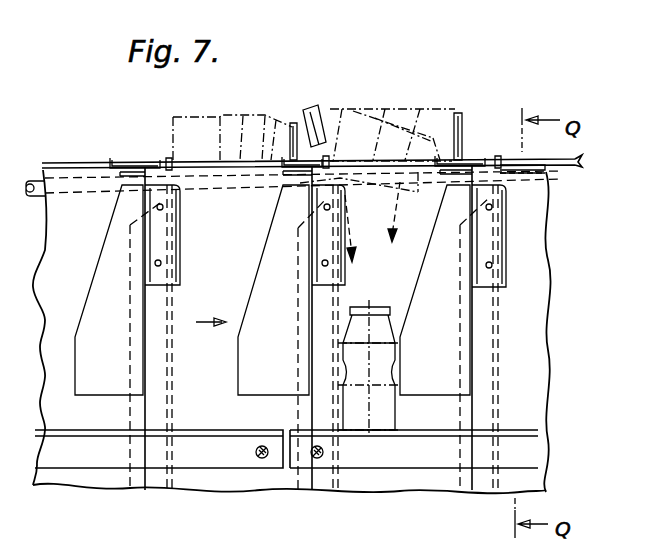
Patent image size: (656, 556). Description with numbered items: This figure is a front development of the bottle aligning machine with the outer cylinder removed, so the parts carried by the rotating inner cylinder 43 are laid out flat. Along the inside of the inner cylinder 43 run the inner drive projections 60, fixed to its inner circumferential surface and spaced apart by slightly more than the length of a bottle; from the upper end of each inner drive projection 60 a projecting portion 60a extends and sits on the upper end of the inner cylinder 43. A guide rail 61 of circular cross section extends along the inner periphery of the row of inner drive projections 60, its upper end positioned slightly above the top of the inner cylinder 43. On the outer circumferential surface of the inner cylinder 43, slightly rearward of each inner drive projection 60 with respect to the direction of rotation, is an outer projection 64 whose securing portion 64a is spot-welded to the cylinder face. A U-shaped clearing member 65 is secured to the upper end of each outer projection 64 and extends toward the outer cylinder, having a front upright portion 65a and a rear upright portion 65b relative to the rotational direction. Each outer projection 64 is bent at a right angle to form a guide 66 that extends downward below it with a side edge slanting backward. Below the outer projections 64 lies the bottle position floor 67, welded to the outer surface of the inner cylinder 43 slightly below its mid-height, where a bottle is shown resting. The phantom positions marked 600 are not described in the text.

The inner cylinder 43 is at (535, 395).
The inner drive projection 60 is at (170, 310).
The projecting portion 60a is at (160, 178).
The phantom position indicator 600 is at (335, 167).
The guide rail 61 is at (558, 157).
The outer projection 64 is at (138, 358).
The securing portion 64a is at (160, 238).
The U-shaped clearing member 65 is at (118, 160).
The front upright portion 65a is at (157, 158).
The rear upright portion 65b is at (110, 158).
The guide 66 is at (112, 359).
The bottle position floor 67 is at (407, 437).